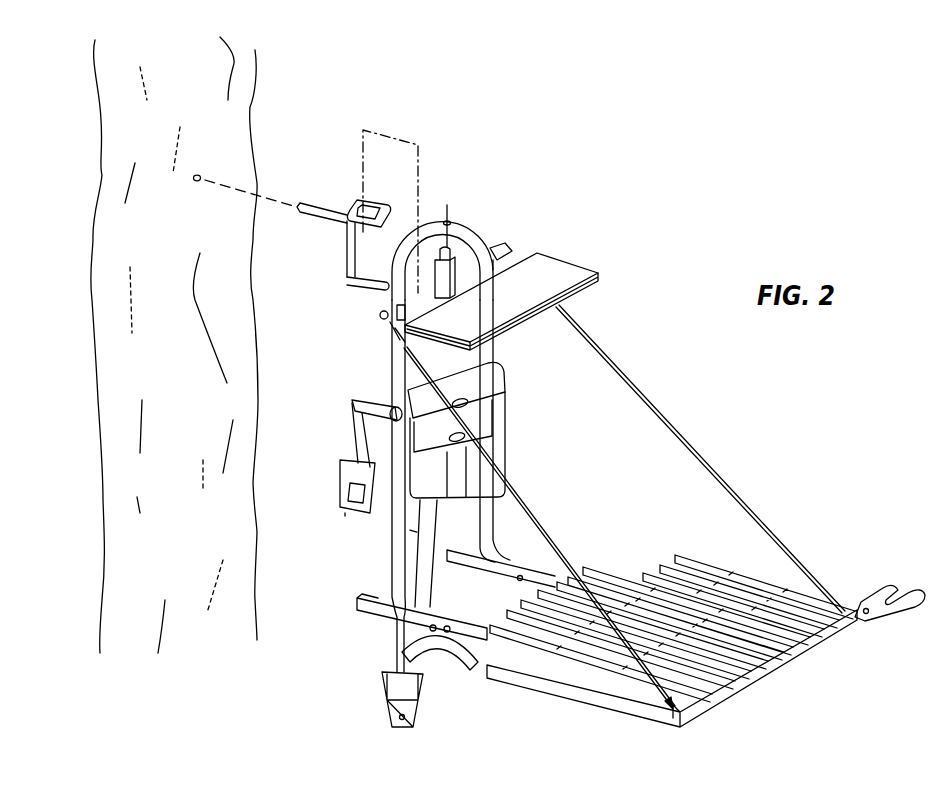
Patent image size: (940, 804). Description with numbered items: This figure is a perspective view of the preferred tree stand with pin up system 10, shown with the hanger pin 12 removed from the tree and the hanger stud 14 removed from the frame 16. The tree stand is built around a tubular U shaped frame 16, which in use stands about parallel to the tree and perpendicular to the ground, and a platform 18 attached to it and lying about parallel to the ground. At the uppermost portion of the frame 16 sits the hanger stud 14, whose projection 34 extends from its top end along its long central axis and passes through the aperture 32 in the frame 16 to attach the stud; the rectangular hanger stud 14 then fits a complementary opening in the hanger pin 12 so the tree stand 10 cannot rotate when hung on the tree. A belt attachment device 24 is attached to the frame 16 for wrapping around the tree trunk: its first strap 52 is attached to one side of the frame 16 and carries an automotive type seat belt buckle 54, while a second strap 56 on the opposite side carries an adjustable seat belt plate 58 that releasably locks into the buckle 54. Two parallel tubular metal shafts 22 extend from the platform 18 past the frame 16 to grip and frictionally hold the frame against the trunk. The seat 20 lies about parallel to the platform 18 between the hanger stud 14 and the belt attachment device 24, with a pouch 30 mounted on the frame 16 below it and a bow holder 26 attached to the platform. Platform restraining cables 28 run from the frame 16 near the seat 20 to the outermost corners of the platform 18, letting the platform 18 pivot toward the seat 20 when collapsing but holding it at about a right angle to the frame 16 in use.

The tree stand with pin up system 10 is at (497, 212).
The hanger pin 12 is at (330, 200).
The hanger stud 14 is at (454, 268).
The frame 16 is at (395, 372).
The platform 18 is at (503, 635).
The seat 20 is at (572, 268).
The tubular metal shafts 22 is at (377, 607).
The belt attachment device 24 is at (417, 532).
The bow holder 26 is at (887, 587).
The platform restraining cables 28 is at (612, 524).
The pouch 30 is at (492, 383).
The aperture 32 is at (447, 220).
The projection 34 is at (428, 238).
The first strap 52 is at (357, 430).
The seat belt buckle 54 is at (340, 480).
The second strap 56 is at (432, 527).
The seat belt plate 58 is at (412, 687).